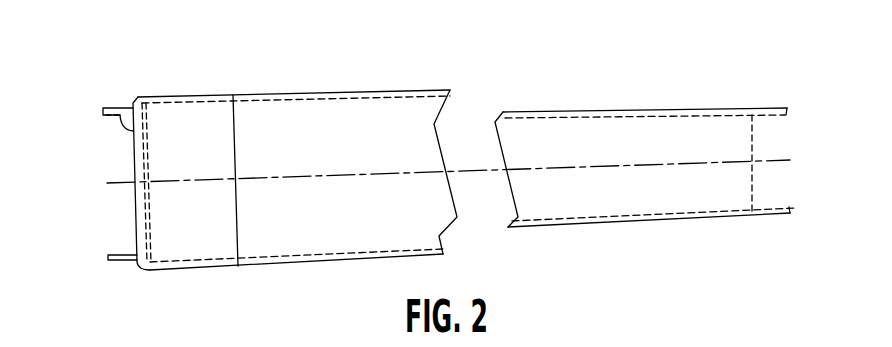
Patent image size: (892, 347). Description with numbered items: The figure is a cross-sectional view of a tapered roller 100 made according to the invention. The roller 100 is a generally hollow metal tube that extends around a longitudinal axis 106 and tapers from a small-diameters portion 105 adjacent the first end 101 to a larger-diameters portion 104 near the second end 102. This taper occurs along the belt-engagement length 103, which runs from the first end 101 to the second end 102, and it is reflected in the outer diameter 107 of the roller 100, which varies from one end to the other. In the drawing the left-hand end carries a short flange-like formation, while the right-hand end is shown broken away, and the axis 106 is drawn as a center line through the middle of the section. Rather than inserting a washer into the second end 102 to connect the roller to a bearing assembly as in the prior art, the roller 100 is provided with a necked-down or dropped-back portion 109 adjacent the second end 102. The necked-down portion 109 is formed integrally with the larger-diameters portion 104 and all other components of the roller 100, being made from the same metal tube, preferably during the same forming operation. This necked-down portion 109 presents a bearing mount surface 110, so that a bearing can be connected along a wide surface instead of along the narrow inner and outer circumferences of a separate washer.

The tapered roller 100 is at (418, 62).
The first end 101 is at (787, 108).
The second end 102 is at (103, 108).
The belt-engagement length 103 is at (523, 112).
The larger-diameters portion 104 is at (285, 263).
The small-diameters portion 105 is at (712, 218).
The longitudinal axis 106 is at (313, 175).
The outer diameter 107 is at (238, 133).
The necked-down portion 109 is at (117, 110).
The bearing mount surface 110 is at (133, 131).